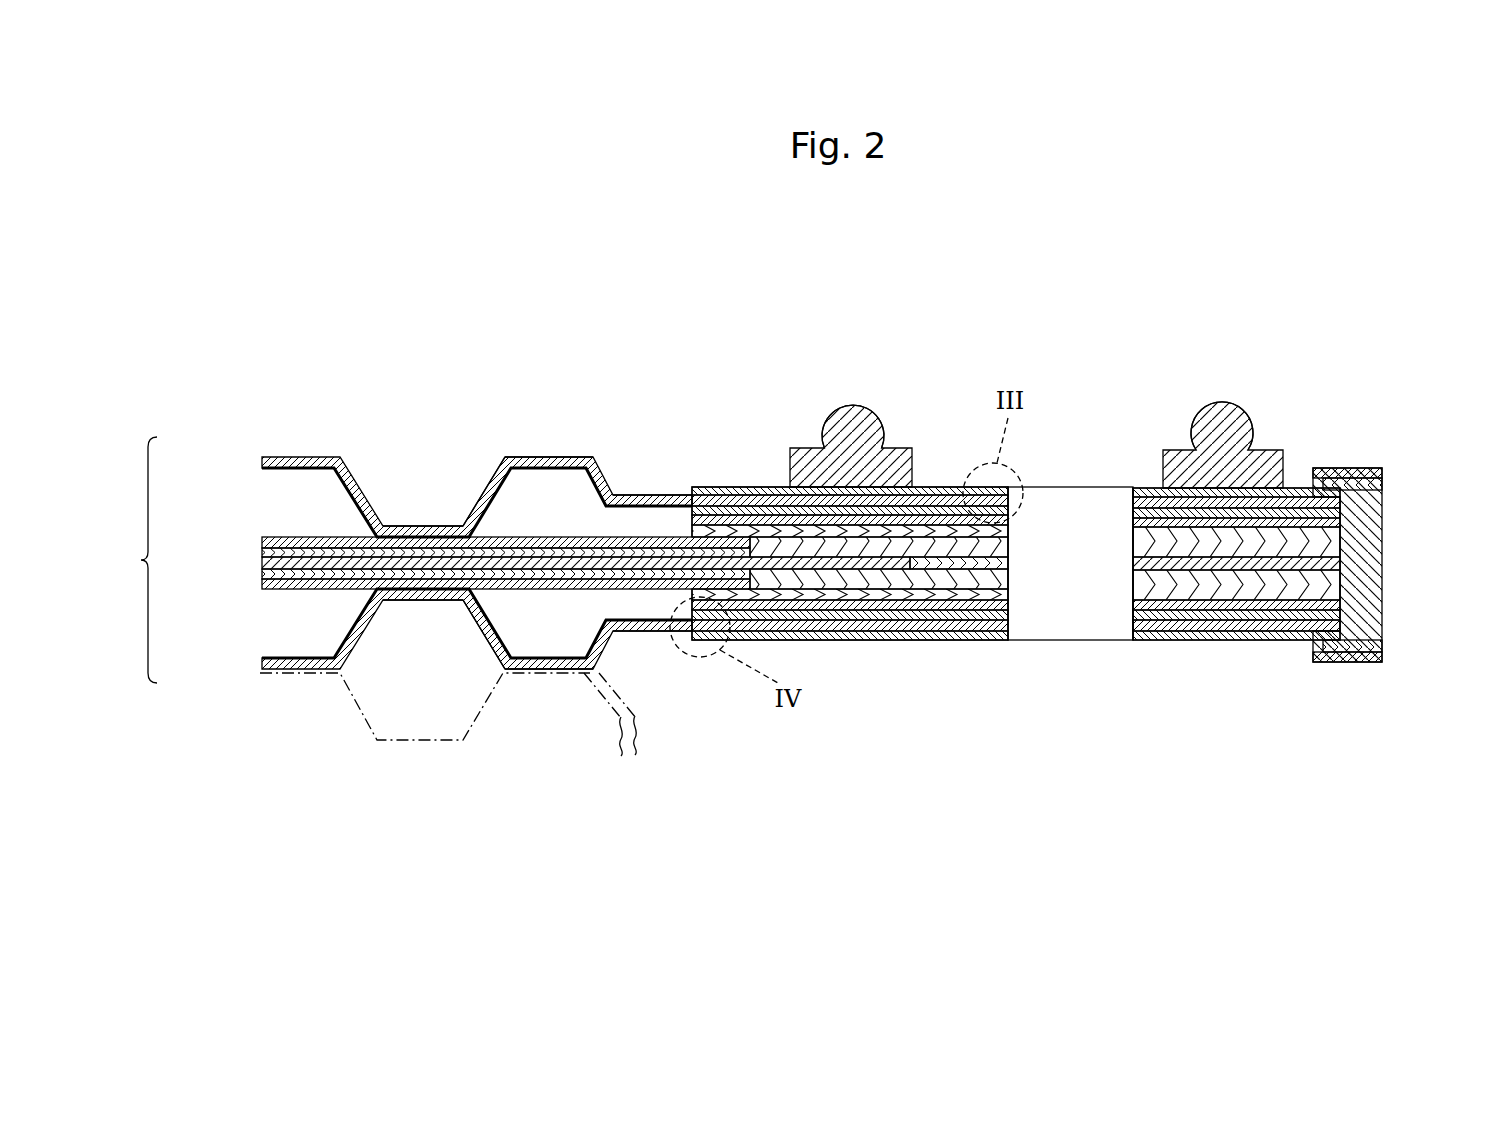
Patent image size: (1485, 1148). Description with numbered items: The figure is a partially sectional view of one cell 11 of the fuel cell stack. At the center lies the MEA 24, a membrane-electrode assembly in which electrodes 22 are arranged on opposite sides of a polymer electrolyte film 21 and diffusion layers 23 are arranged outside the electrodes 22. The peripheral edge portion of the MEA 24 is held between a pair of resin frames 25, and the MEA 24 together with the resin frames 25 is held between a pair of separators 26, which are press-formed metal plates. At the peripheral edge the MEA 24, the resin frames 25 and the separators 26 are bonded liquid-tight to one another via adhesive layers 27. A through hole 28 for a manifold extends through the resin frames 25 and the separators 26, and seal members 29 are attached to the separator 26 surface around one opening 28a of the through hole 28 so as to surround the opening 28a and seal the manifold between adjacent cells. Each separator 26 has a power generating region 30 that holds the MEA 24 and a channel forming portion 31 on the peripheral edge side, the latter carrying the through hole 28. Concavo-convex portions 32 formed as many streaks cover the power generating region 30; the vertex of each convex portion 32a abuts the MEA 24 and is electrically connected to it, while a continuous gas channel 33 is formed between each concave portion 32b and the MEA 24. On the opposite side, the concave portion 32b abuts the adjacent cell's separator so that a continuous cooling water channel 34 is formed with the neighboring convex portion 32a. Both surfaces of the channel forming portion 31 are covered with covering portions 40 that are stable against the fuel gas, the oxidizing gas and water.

The cell 11 is at (495, 362).
The polymer electrolyte film 21 is at (260, 563).
The electrodes 22 is at (258, 551).
The diffusion layers 23 is at (258, 538).
The MEA 24 is at (130, 560).
The resin frames 25 is at (782, 530).
The separators 26 is at (657, 491).
The adhesive layers 27 is at (720, 525).
The through hole 28 is at (1052, 597).
The opening 28a is at (1130, 507).
The seal members 29 is at (858, 420).
The power generating regions 30 is at (487, 491).
The channel forming portions 31 is at (938, 489).
The concavo-convex portions 32 is at (577, 462).
The convex portion 32a is at (404, 525).
The concave portion 32b is at (550, 460).
The gas channel 33 is at (593, 470).
The cooling water channel 34 is at (455, 742).
The covering portions 40 is at (1141, 497).